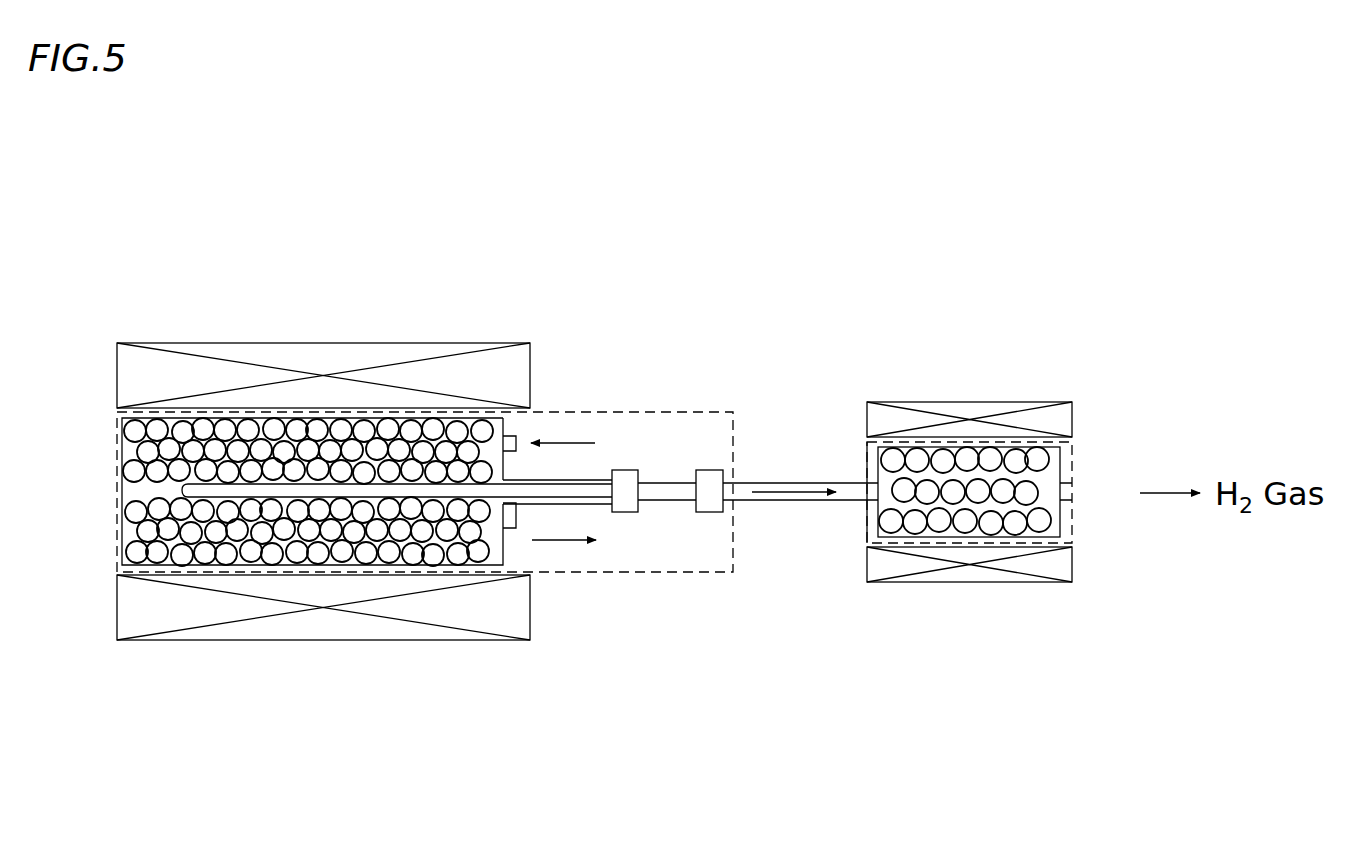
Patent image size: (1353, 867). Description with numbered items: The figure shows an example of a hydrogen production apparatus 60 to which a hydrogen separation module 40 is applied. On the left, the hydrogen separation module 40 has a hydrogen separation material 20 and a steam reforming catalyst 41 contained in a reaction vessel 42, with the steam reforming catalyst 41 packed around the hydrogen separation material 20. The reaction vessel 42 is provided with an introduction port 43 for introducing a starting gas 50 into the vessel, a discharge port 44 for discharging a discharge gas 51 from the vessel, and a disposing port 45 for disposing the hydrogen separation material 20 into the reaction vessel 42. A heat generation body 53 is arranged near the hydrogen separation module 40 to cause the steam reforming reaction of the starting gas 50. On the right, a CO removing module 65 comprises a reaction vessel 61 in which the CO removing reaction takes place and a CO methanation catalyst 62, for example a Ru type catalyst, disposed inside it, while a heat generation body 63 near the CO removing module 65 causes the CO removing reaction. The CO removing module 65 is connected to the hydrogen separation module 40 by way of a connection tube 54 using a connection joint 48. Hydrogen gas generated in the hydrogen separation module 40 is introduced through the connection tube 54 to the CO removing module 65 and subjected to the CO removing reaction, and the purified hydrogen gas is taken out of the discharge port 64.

The hydrogen separation material 20 is at (406, 477).
The hydrogen separation module 40 is at (650, 572).
The steam reforming catalyst 41 is at (147, 466).
The reaction vessel 42 is at (122, 503).
The introduction port 43 is at (516, 440).
The discharge port 44 is at (516, 540).
The disposing port 45 is at (635, 470).
The connection joint 48 is at (724, 480).
The starting gas 50 is at (579, 445).
The discharge gas 51 is at (579, 542).
The heat generation body 53 is at (336, 354).
The connection tube 54 is at (790, 530).
The hydrogen production apparatus 60 is at (667, 714).
The reaction vessel 61 is at (1075, 443).
The CO methanation catalyst 62 is at (875, 446).
The heat generation body 63 is at (963, 402).
The discharge port 64 is at (1075, 487).
The CO removing module 65 is at (1075, 523).